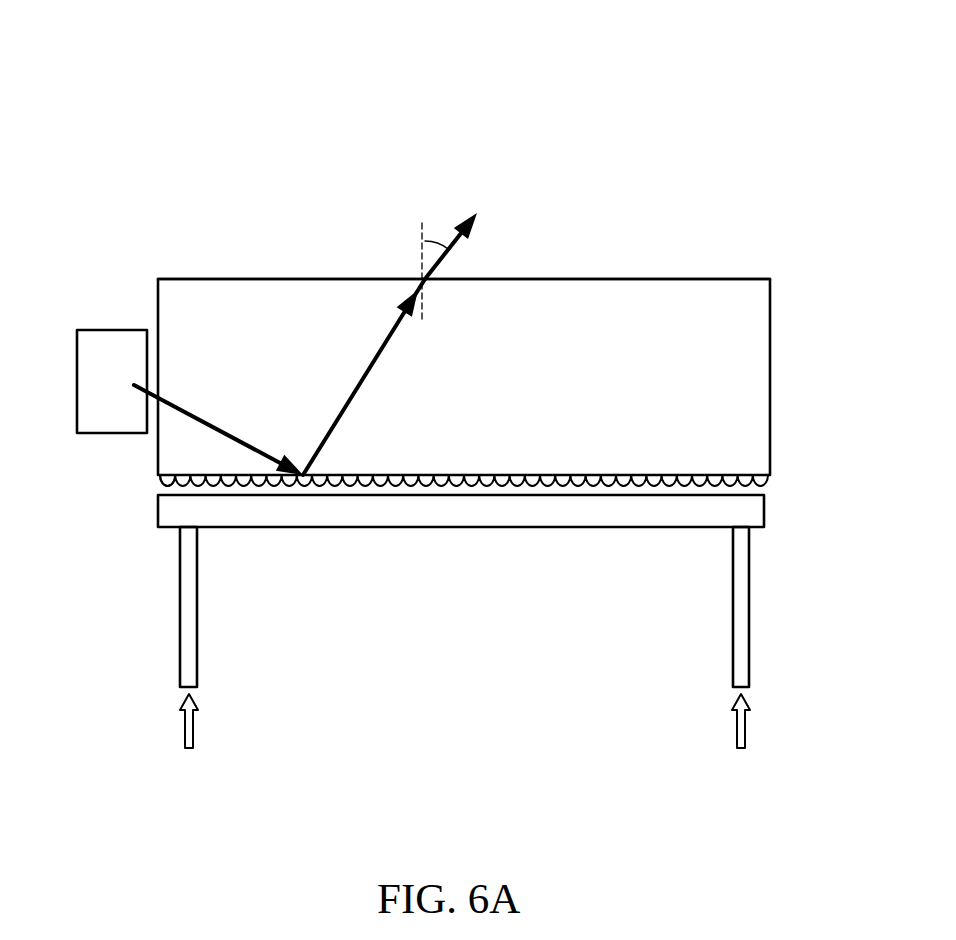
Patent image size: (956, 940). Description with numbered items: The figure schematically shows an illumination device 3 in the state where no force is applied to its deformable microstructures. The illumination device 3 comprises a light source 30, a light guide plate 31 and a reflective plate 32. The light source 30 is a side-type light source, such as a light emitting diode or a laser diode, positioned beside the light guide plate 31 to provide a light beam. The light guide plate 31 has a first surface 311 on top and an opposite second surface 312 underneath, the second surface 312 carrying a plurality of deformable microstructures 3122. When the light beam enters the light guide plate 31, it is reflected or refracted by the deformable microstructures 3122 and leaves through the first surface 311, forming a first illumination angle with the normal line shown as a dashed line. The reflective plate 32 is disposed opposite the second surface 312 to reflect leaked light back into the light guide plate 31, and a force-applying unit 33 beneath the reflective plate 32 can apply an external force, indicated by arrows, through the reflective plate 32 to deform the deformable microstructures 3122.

The illumination device 3 is at (294, 48).
The light source 30 is at (90, 330).
The light guide plate 31 is at (228, 279).
The first surface 311 is at (752, 279).
The second surface 312 is at (662, 475).
The deformable microstructures 3122 is at (158, 487).
The reflective plate 32 is at (764, 512).
The force-applying unit 33 is at (187, 650).